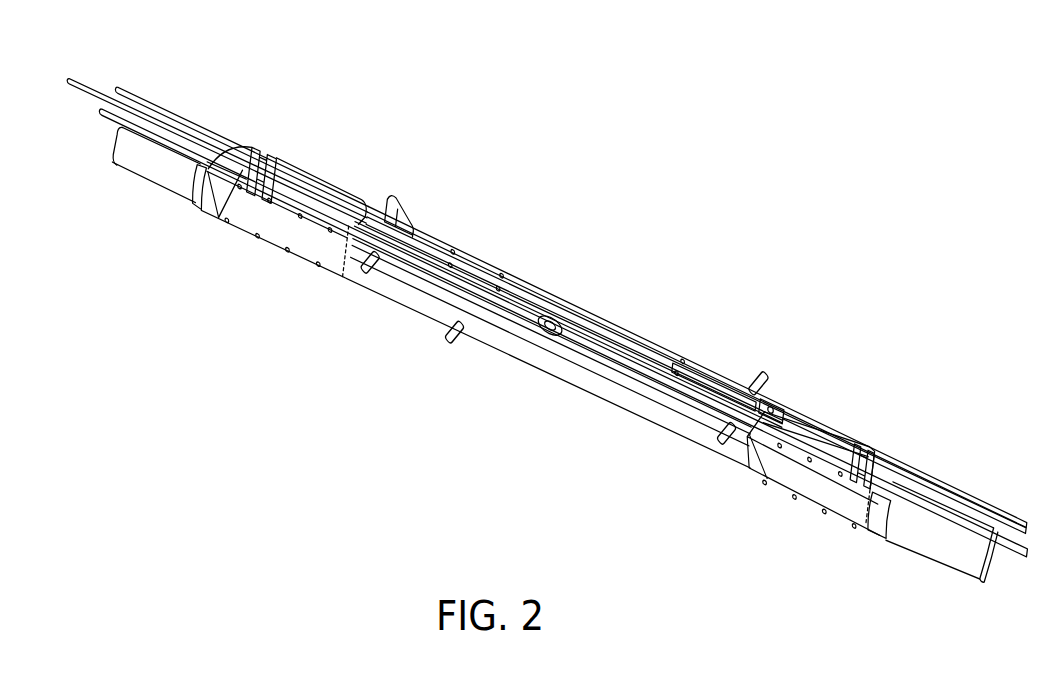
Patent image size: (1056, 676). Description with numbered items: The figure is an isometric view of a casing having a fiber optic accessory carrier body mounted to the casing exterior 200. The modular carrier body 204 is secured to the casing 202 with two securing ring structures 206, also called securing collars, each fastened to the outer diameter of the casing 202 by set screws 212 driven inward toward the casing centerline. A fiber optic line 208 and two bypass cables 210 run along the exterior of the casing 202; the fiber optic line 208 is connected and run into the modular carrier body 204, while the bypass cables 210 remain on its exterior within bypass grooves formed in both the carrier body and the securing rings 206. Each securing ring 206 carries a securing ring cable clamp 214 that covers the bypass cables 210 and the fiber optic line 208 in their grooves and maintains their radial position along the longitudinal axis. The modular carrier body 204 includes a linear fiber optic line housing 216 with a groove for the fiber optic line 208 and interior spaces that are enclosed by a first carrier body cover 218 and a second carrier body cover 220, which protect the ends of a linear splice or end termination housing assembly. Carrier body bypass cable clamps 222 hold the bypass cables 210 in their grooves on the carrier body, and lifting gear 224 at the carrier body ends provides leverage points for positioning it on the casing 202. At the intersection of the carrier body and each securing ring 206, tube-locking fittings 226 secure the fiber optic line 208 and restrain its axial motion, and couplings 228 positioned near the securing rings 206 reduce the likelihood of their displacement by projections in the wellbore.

The casing exterior 200 is at (747, 127).
The casing 202 is at (594, 396).
The modular carrier body 204 is at (651, 334).
The securing ring structures 206 is at (232, 238).
The fiber optic line 208 is at (100, 92).
The bypass cables 210 is at (174, 112).
The set screws 212 is at (766, 495).
The securing ring cable clamp 214 is at (263, 153).
The linear fiber optic line housing 216 is at (586, 314).
The first carrier body cover 218 is at (479, 268).
The second carrier body cover 220 is at (716, 379).
The carrier body bypass cable clamps 222 is at (547, 338).
The lifting gear 224 is at (398, 198).
The tube-locking fittings 226 is at (782, 409).
The couplings 228 is at (926, 558).